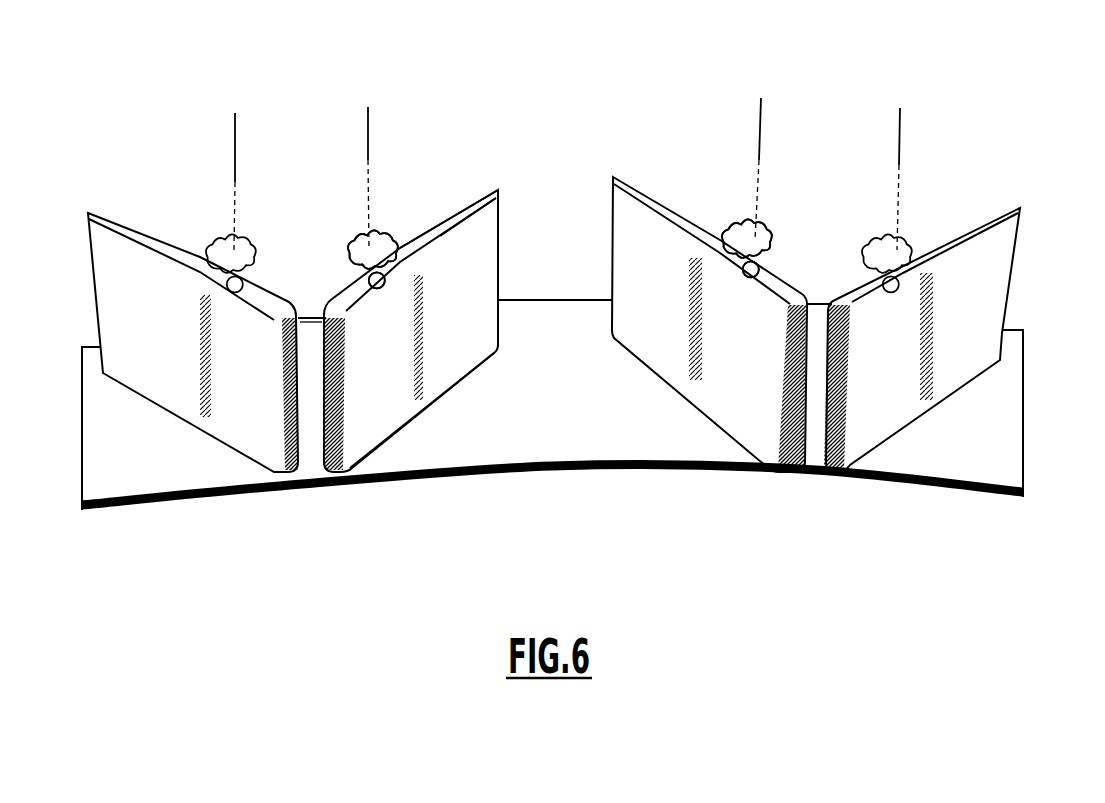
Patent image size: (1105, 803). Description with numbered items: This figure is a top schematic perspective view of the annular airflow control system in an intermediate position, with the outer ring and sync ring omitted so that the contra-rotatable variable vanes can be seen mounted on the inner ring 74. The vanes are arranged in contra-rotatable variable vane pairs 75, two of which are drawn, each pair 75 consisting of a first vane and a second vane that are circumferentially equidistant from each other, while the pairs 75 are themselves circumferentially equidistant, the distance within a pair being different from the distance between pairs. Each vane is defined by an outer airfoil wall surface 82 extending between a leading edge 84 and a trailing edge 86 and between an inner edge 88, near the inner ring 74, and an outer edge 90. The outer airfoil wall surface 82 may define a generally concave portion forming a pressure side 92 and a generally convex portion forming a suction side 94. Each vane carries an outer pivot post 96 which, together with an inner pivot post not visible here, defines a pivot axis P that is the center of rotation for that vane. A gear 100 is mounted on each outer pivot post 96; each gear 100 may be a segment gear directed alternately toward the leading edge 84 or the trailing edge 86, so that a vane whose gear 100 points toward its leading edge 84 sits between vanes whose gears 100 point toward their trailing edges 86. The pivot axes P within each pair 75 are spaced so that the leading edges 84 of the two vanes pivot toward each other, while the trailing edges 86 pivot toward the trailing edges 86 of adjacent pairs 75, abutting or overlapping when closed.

The inner ring 74 is at (997, 418).
The contra-rotatable variable vane pair 75 is at (485, 536).
The outer airfoil wall surface 82 is at (432, 367).
The leading edge 84 is at (313, 318).
The trailing edge 86 is at (502, 213).
The inner edge 88 is at (415, 413).
The outer edge 90 is at (426, 230).
The pressure side 92 is at (464, 232).
The suction side 94 is at (395, 246).
The outer pivot post 96 is at (764, 269).
The gear 100 is at (248, 256).
The pivot axis P is at (237, 158).